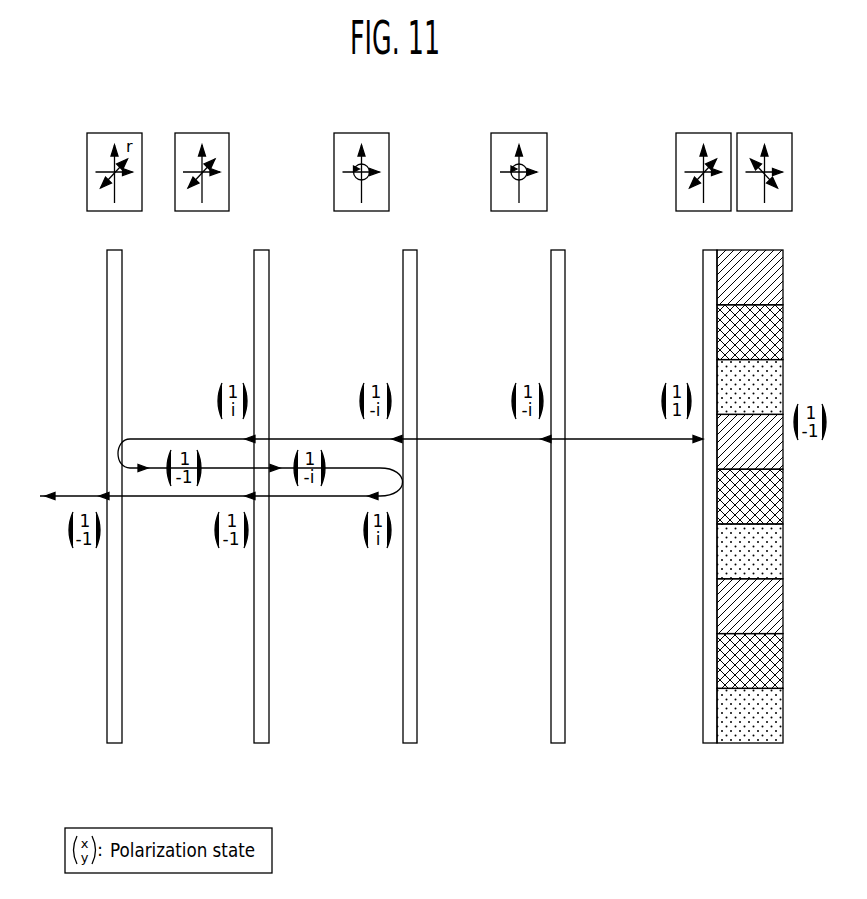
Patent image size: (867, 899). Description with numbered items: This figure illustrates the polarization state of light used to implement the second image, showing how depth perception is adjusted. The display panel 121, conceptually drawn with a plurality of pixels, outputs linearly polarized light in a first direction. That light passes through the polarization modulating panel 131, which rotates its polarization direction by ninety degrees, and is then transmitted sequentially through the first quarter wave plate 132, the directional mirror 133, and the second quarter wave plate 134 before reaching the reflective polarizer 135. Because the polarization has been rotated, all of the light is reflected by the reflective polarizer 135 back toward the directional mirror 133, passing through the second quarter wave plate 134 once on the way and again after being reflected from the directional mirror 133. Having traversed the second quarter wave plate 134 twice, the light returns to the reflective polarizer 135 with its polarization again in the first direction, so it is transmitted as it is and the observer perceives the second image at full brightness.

The display panel 121 is at (755, 745).
The polarization modulating panel 131 is at (712, 737).
The first quarter wave plate 132 is at (560, 737).
The directional mirror 133 is at (413, 737).
The second quarter wave plate 134 is at (264, 737).
The reflective polarizer 135 is at (117, 737).